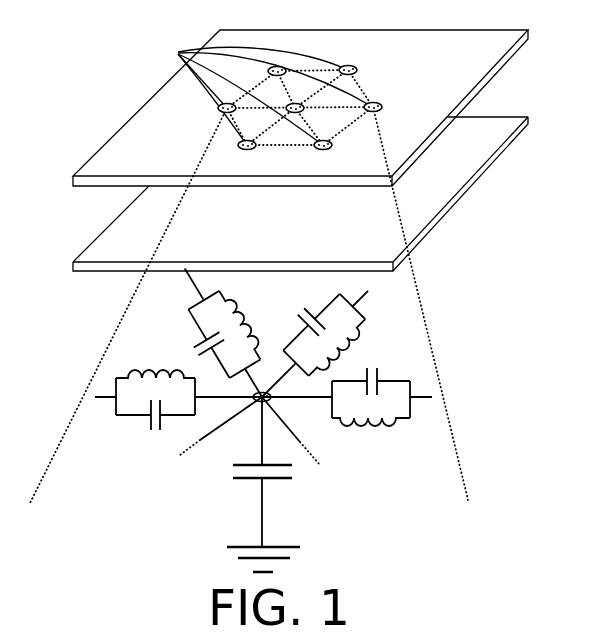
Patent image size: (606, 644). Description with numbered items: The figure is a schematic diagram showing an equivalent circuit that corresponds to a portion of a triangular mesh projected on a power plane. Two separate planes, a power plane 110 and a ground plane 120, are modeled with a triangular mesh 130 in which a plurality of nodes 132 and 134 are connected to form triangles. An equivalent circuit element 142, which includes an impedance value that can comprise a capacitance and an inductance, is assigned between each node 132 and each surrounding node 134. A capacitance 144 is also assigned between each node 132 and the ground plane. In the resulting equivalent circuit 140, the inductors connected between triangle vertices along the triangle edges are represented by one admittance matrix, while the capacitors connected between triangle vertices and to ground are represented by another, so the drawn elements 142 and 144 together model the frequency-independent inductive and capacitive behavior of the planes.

The power plane 110 is at (530, 32).
The ground plane 120 is at (530, 119).
The triangular mesh 130 is at (341, 158).
The node 132 is at (178, 53).
The surrounding nodes 134 is at (257, 94).
The equivalent circuit 140 is at (258, 413).
The equivalent circuit element 142 is at (137, 418).
The capacitance 144 is at (278, 481).